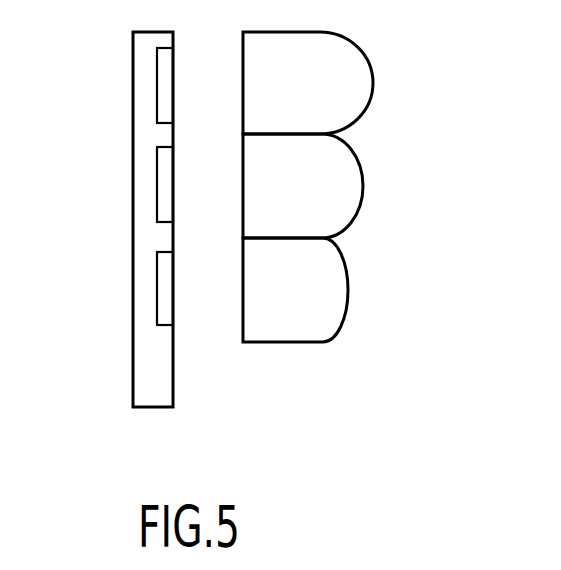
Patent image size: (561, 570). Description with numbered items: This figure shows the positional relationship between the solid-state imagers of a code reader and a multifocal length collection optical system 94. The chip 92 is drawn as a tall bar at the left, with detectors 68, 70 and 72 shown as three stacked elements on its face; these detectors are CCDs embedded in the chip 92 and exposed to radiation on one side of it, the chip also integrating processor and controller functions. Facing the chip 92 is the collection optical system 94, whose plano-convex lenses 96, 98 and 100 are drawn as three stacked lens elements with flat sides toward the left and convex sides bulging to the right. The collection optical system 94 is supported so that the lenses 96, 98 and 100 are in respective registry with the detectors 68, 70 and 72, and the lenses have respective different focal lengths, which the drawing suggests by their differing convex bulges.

The detector 68 is at (163, 90).
The detector 70 is at (163, 190).
The detector 72 is at (163, 295).
The chip 92 is at (143, 375).
The collection optical system 94 is at (417, 67).
The plano-convex lens 96 is at (313, 98).
The plano-convex lens 98 is at (313, 202).
The plano-convex lens 100 is at (322, 303).